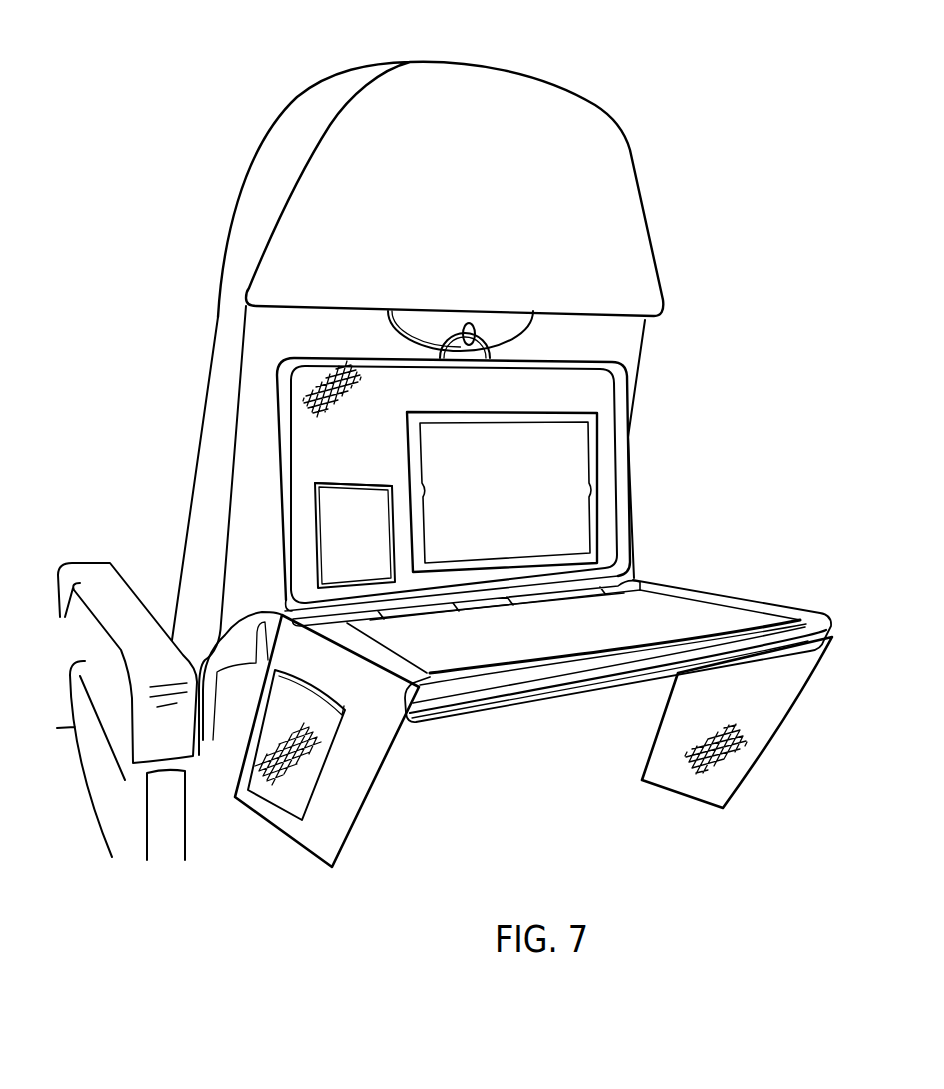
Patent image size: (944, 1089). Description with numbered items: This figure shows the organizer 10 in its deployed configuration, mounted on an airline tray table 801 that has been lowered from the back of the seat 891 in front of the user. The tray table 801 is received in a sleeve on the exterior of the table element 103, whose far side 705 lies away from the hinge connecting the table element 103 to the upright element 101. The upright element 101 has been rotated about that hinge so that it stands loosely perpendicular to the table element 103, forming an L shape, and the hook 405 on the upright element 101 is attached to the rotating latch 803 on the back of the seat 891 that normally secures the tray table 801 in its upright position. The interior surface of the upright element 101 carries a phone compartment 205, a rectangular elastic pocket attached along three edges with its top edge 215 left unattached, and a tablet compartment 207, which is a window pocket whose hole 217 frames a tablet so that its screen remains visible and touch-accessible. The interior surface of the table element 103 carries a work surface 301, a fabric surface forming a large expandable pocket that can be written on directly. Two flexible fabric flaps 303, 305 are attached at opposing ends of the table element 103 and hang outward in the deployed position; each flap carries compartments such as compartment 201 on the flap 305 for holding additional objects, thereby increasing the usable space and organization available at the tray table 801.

The organizer 10 is at (254, 382).
The upright element 101 is at (280, 452).
The table element 103 is at (503, 700).
The compartment 201 is at (287, 807).
The phone compartment 205 is at (369, 557).
The tablet compartment 207 is at (530, 423).
The top edge 215 is at (374, 484).
The hole 217 is at (509, 524).
The work surface 301 is at (530, 643).
The flap 303 is at (755, 769).
The flap 305 is at (340, 843).
The hook 405 is at (493, 355).
The side of the sleeve 705 is at (407, 720).
The tray table 801 is at (460, 713).
The rotating latch 803 is at (468, 322).
The seat 891 is at (430, 60).